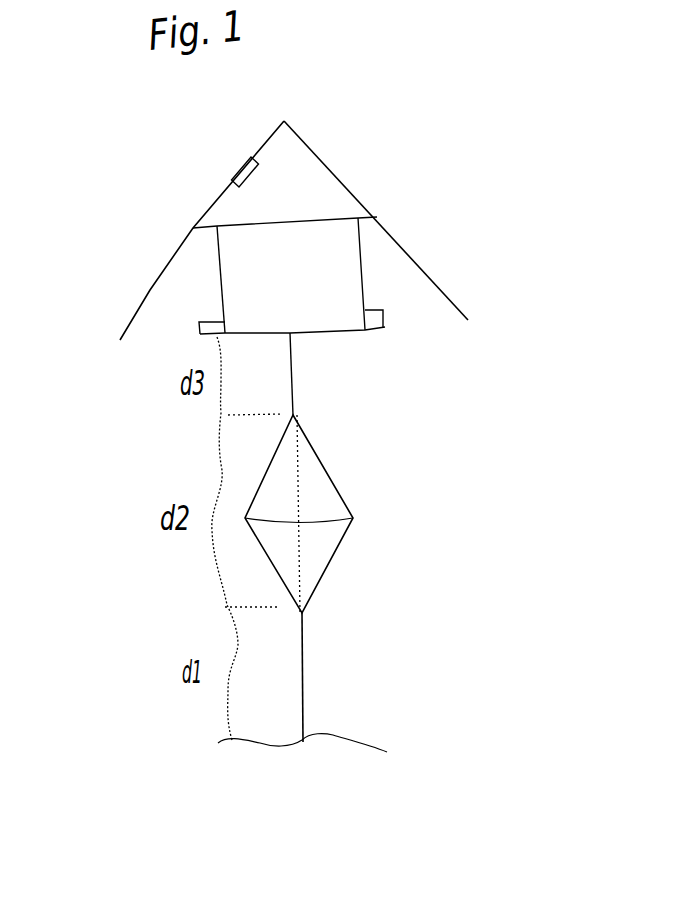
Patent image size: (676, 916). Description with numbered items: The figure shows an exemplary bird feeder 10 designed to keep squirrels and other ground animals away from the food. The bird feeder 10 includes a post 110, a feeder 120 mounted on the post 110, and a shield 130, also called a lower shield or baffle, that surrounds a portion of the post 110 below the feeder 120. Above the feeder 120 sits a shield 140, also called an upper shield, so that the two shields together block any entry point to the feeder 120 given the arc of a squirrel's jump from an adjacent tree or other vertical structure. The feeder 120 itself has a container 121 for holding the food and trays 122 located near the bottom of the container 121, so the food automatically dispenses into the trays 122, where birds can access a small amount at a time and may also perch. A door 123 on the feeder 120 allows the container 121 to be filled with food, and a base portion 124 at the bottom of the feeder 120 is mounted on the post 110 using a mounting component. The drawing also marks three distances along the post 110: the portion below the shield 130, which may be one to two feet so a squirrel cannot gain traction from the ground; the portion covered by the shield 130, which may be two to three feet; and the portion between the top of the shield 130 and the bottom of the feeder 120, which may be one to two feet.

The bird feeder 10 is at (492, 146).
The post 110 is at (305, 680).
The feeder 120 is at (363, 335).
The container 121 is at (350, 258).
The trays 122 is at (384, 327).
The door 123 is at (237, 163).
The base portion 124 is at (323, 333).
The shield 130 is at (340, 493).
The shield 140 is at (152, 290).